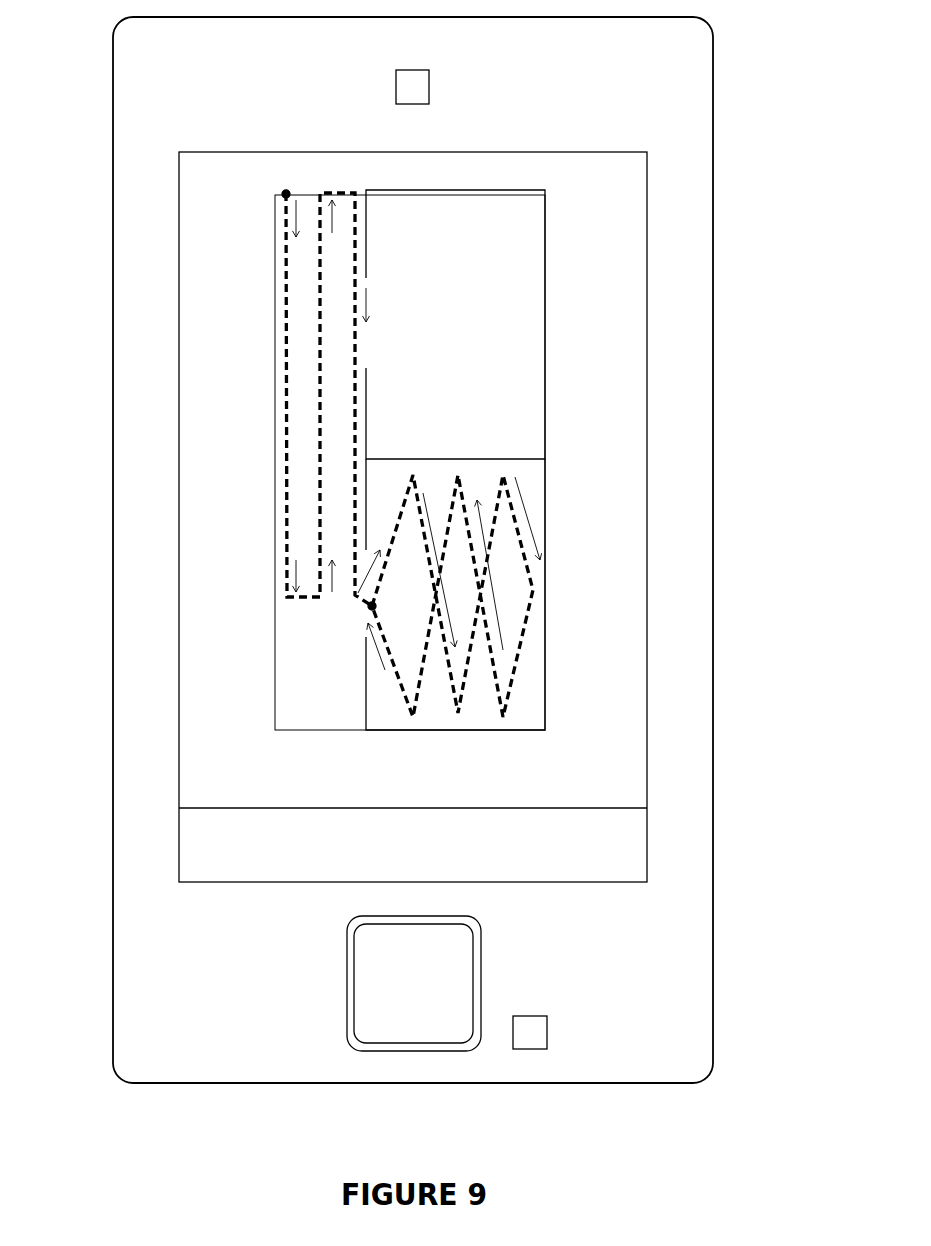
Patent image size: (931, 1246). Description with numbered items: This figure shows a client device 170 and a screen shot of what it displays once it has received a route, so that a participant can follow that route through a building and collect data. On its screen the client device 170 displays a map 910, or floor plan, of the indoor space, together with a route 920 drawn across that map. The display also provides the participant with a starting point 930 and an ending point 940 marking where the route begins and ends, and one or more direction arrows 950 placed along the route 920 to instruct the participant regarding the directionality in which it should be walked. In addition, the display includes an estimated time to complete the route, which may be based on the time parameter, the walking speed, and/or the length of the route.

The client device 170 is at (713, 45).
The map 910 is at (545, 408).
The route 920 is at (518, 663).
The starting point 930 is at (286, 194).
The ending point 940 is at (368, 607).
The direction arrows 950 is at (296, 566).